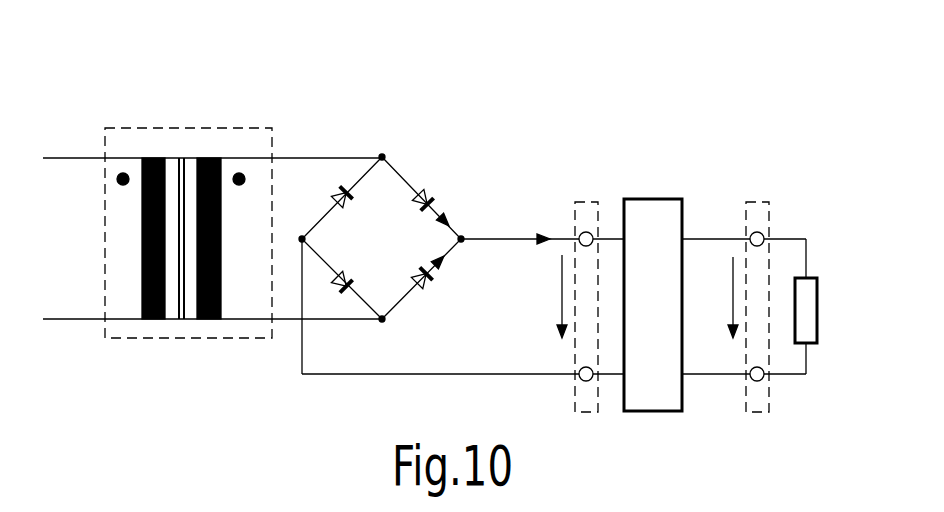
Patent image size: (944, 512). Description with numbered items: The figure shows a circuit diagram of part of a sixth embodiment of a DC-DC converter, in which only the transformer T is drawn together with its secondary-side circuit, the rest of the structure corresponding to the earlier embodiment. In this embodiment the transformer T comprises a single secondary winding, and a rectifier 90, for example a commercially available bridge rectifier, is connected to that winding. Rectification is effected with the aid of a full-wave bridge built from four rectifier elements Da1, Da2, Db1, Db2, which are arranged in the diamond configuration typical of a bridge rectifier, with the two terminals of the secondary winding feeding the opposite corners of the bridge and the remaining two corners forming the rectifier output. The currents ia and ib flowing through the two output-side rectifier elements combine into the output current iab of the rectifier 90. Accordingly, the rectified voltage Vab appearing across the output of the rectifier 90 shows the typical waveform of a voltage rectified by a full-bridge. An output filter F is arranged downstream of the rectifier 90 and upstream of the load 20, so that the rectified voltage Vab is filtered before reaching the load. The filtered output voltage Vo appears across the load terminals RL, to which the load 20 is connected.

The rectifier 90 is at (382, 186).
The load 20 is at (817, 308).
The transformer T is at (188, 214).
The output filter F is at (653, 305).
The load terminals RL is at (777, 303).
The rectifier element Da1 is at (445, 187).
The rectifier element Da2 is at (350, 263).
The rectifier element Db1 is at (441, 291).
The rectifier element Db2 is at (318, 188).
The current ia is at (459, 212).
The current ib is at (450, 270).
The current iab is at (567, 297).
The rectified voltage Vab is at (542, 296).
The output voltage Vo is at (720, 297).